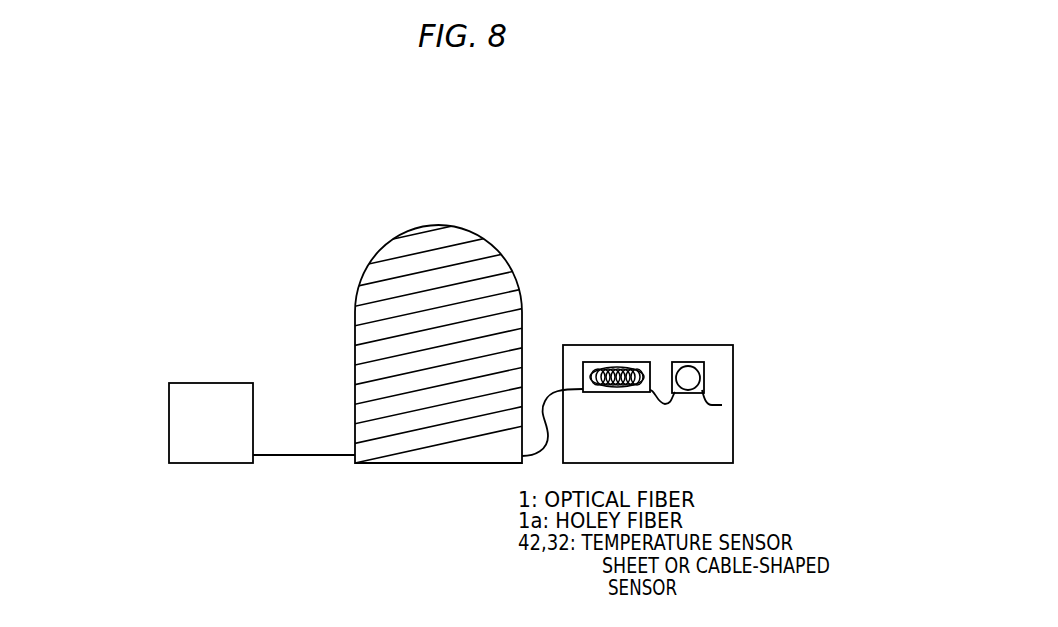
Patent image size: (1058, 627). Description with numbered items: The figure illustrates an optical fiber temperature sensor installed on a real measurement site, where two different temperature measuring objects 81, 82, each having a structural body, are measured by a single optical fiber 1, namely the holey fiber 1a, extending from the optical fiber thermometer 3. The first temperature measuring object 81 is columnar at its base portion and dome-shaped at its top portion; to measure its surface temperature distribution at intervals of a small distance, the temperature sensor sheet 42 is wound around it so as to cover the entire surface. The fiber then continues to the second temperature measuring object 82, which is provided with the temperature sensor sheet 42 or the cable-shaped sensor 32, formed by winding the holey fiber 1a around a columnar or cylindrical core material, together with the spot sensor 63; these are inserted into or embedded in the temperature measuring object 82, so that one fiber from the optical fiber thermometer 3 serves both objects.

The temperature measuring object 81 is at (366, 276).
The temperature sensor sheet 42 is at (360, 350).
The optical fiber thermometer 3 is at (203, 383).
The optical fiber 1 is at (276, 454).
The holey fiber 1a is at (318, 455).
The temperature measuring object 82 is at (733, 370).
The cable-shaped sensor 32 is at (610, 359).
The spot sensor 63 is at (695, 360).